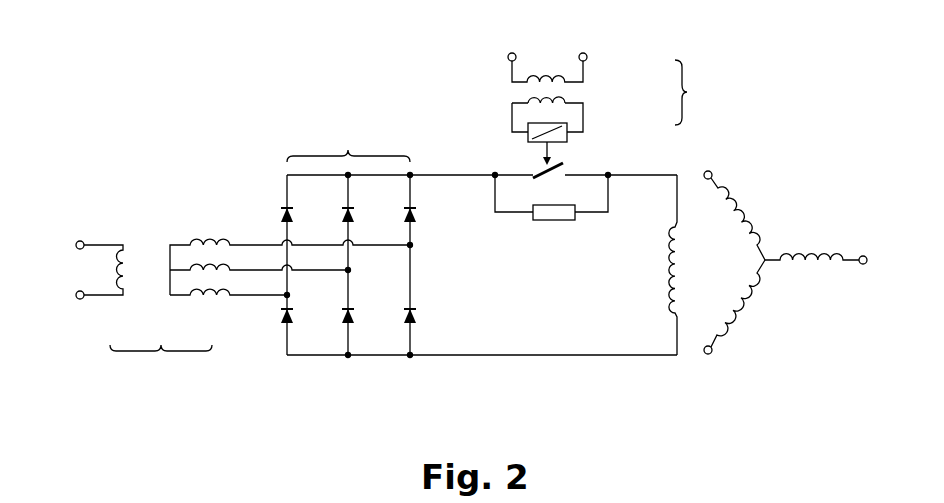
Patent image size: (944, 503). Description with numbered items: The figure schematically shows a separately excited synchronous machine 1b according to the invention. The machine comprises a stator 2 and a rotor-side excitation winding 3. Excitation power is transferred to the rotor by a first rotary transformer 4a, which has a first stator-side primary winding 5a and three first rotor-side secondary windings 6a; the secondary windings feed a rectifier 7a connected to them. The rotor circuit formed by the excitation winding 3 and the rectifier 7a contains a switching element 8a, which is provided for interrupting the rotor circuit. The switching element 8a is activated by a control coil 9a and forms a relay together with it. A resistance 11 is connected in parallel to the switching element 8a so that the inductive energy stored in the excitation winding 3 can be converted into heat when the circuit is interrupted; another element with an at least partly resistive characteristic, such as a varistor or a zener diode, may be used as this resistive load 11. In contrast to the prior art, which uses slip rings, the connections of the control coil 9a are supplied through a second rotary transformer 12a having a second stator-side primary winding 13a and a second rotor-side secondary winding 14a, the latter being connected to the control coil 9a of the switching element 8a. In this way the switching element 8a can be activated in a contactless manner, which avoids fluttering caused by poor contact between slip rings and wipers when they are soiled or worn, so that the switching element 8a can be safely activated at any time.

The synchronous machine 1b is at (168, 93).
The stator 2 is at (771, 263).
The excitation winding 3 is at (668, 293).
The first rotary transformer 4a is at (161, 369).
The first stator-side primary winding 5a is at (130, 294).
The first rotor-side secondary windings 6a is at (204, 298).
The rectifier 7a is at (479, 237).
The switching element 8a is at (538, 171).
The control coil 9a is at (527, 132).
The resistance 11 is at (556, 214).
The second rotary transformer 12a is at (596, 109).
The second stator-side primary winding 13a is at (566, 85).
The second rotor-side secondary winding 14a is at (568, 104).